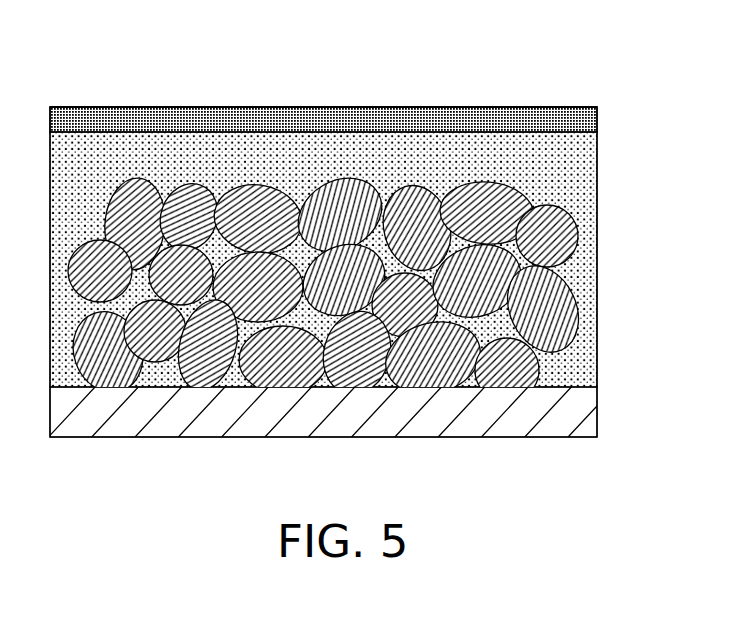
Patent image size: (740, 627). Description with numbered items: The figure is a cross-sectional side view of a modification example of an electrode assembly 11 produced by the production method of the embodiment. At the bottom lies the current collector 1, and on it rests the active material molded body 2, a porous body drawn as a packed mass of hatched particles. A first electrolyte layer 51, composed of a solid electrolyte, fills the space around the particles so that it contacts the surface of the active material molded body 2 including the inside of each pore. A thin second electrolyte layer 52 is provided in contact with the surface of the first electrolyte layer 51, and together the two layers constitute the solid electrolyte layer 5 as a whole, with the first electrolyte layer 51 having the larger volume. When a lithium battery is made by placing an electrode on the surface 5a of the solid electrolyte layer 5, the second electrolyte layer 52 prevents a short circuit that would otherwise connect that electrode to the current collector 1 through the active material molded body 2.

The electrode assembly 11 is at (578, 64).
The current collector 1 is at (590, 406).
The active material molded body 2 is at (578, 307).
The solid electrolyte layer 5 is at (662, 107).
The first electrolyte layer 51 is at (588, 160).
The second electrolyte layer 52 is at (597, 119).
The surface of the solid electrolyte layer 5a is at (203, 108).